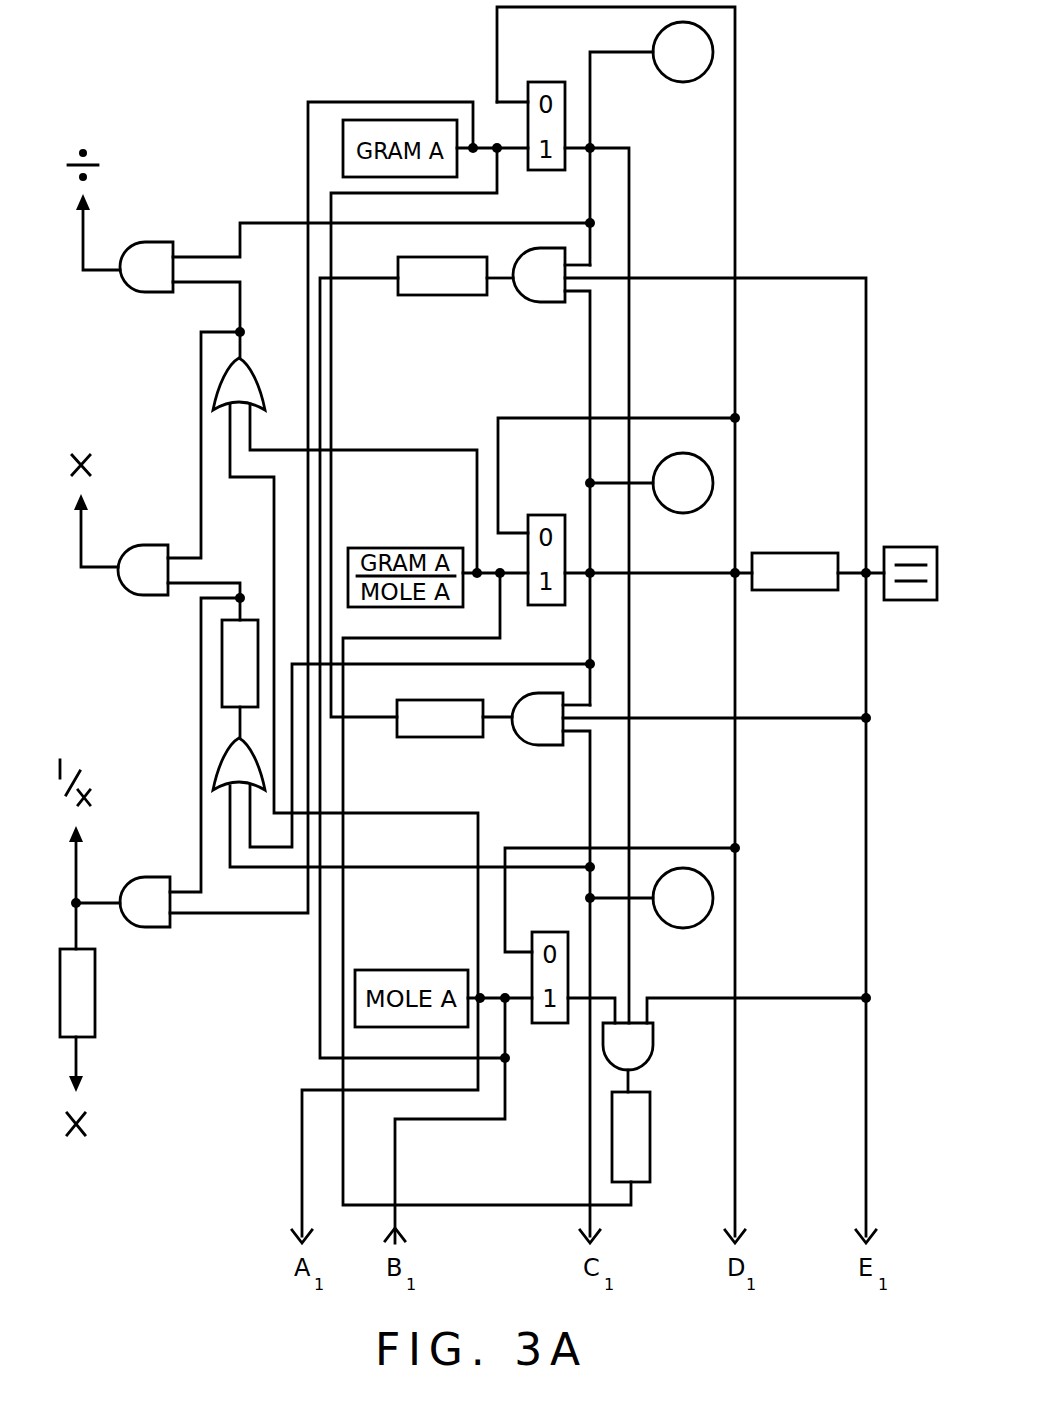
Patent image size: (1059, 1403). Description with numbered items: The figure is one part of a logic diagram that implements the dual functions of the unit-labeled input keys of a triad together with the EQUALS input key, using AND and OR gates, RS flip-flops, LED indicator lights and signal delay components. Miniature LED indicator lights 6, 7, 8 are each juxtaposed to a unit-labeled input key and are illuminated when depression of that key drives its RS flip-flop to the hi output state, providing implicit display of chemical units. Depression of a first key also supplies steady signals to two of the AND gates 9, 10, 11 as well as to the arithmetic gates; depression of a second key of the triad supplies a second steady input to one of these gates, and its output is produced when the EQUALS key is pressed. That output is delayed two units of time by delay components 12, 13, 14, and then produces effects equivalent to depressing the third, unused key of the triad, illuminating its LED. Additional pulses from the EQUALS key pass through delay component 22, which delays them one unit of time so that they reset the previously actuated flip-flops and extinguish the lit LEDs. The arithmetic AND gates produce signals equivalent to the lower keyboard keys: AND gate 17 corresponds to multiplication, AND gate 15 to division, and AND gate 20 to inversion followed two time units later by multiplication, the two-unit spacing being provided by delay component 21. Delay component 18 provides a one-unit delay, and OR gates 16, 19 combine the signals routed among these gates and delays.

The LED indicator light 6 is at (683, 52).
The LED indicator light 7 is at (683, 483).
The LED indicator light 8 is at (683, 898).
The AND gate 9 is at (539, 275).
The AND gate 10 is at (537, 719).
The AND gate 11 is at (628, 1046).
The signal delay component 12 is at (442, 276).
The signal delay component 13 is at (440, 718).
The signal delay component 14 is at (631, 1137).
The AND gate 15 is at (146, 267).
The OR gate 16 is at (239, 384).
The AND gate 17 is at (143, 570).
The signal delay component 18 is at (240, 663).
The OR gate 19 is at (239, 764).
The AND gate 20 is at (145, 902).
The signal delay component 21 is at (77, 993).
The signal delay component 22 is at (795, 571).